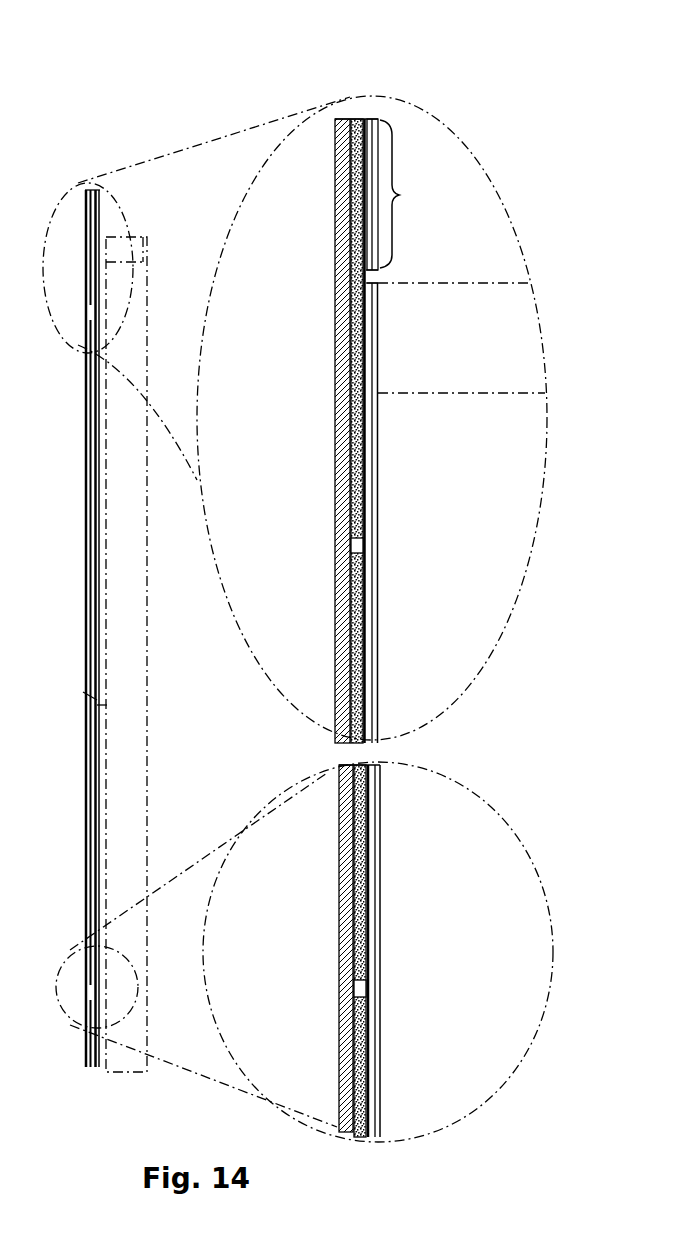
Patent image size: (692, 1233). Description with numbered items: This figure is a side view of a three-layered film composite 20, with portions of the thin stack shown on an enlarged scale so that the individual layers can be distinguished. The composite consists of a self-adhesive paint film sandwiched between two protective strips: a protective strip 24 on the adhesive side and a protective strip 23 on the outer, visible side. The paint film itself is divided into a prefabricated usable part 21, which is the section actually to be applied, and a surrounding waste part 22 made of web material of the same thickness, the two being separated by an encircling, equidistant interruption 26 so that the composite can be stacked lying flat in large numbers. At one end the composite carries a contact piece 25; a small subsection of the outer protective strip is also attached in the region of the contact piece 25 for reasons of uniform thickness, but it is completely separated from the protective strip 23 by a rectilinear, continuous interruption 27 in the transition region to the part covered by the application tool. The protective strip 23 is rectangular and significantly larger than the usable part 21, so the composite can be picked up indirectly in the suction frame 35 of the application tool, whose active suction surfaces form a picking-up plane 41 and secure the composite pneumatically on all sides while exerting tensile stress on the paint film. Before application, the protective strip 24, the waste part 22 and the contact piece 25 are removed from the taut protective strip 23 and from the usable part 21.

The three-layered film composite 20 is at (333, 33).
The usable part of the paint film 21 is at (360, 640).
The waste part of the paint film 22 is at (362, 468).
The protective strip on the outer side 23 is at (375, 773).
The protective strip on the adhesive side 24 is at (337, 355).
The contact piece 25 is at (402, 194).
The interruption 26 is at (358, 544).
The interruption 27 is at (367, 277).
The suction frame 35 is at (440, 397).
The picking-up plane 41 is at (83, 692).